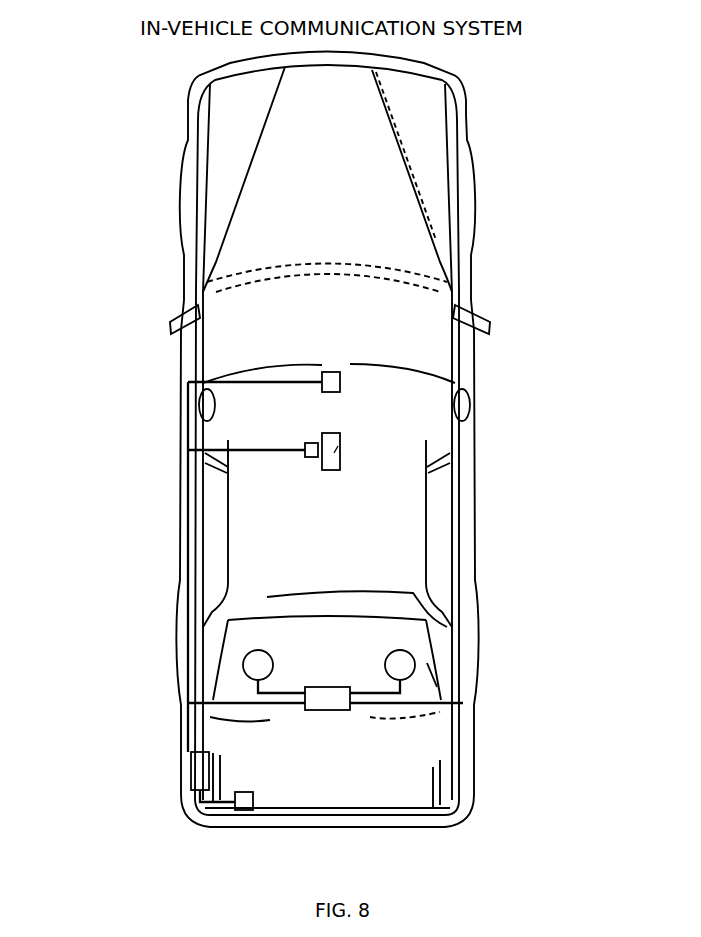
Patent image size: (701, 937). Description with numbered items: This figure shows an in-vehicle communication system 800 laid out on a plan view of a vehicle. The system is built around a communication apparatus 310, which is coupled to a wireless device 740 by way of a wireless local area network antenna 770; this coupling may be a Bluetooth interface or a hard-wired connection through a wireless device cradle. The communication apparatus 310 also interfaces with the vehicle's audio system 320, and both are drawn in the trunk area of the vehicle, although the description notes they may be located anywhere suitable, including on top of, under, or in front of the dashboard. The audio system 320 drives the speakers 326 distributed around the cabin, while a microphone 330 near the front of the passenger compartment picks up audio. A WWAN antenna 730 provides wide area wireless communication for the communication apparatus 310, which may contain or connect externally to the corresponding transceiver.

The in-vehicle communication system 800 is at (688, 118).
The microphone 330 is at (340, 380).
The speaker 326 is at (618, 400).
The wireless local area network antenna 770 is at (305, 447).
The wireless device 740 is at (437, 455).
The audio system 320 is at (343, 729).
The communication apparatus 310 is at (209, 764).
The WWAN antenna 730 is at (245, 811).